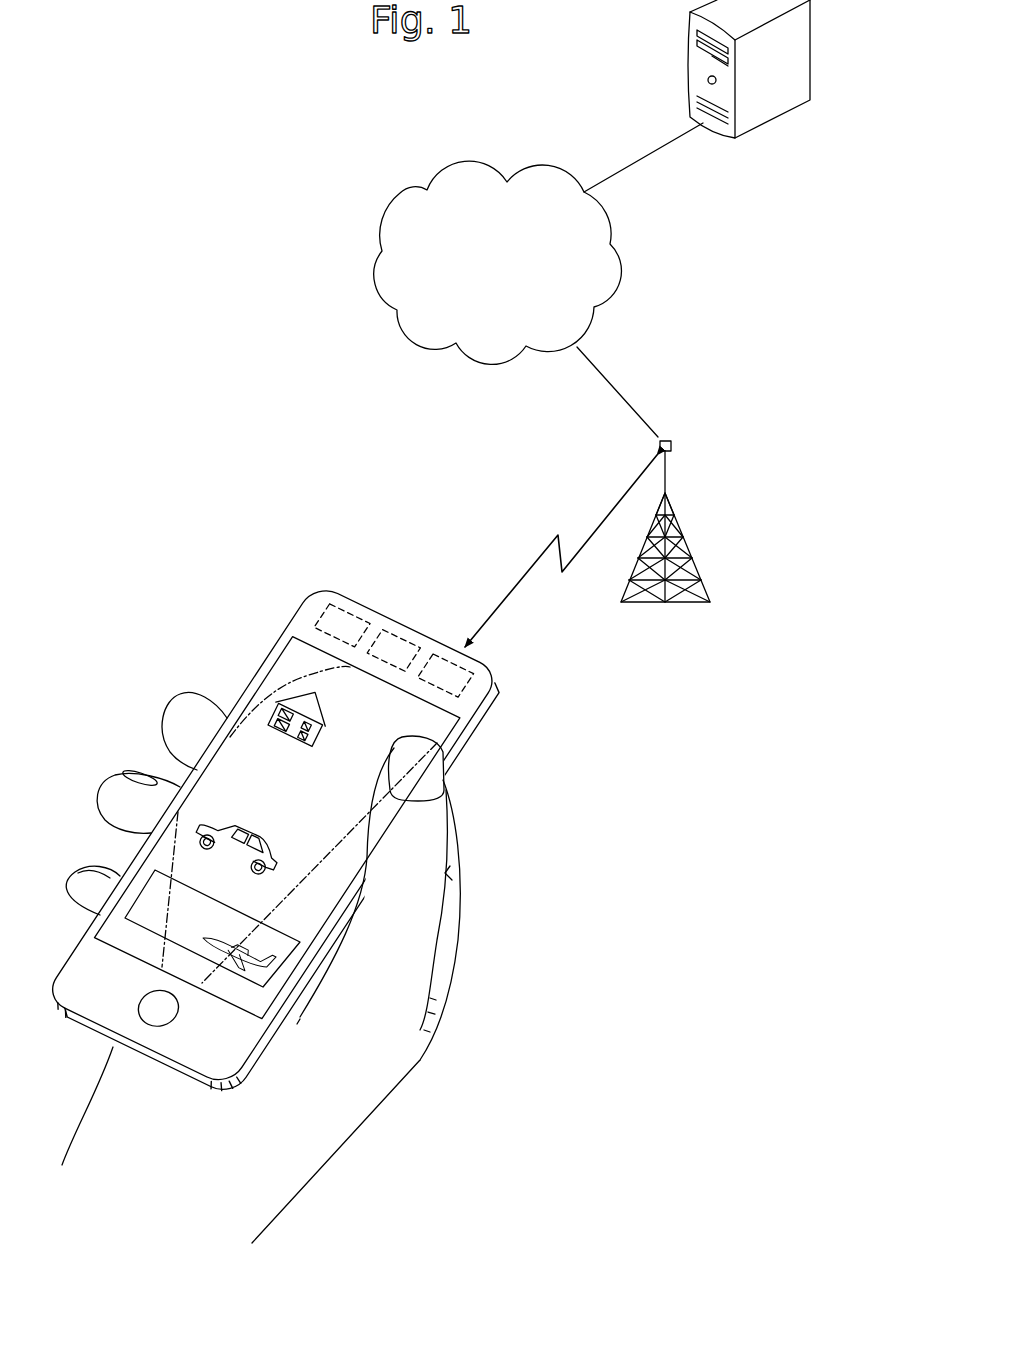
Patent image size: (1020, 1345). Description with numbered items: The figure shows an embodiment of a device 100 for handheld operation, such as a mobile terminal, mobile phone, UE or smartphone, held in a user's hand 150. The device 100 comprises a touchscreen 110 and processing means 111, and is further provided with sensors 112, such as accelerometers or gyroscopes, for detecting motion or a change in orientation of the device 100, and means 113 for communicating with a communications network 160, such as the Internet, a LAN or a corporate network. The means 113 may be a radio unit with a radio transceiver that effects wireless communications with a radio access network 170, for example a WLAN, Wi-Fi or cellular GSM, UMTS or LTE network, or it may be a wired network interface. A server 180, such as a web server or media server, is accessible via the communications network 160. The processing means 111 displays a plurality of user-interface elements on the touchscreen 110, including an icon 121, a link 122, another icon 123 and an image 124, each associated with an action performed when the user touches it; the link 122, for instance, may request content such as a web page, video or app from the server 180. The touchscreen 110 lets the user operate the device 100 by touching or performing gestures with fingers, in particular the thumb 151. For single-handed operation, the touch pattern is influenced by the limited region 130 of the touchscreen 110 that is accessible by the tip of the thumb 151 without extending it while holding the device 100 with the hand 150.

The device for handheld operation 100 is at (290, 597).
The touchscreen 110 is at (393, 718).
The processing means 111 is at (348, 613).
The sensors 112 is at (390, 643).
The means for communicating with a communications network 113 is at (467, 676).
The icon 121 is at (273, 703).
The link 122 is at (224, 762).
The icon 123 is at (193, 827).
The image 124 is at (157, 880).
The region of touchscreen 130 is at (303, 677).
The hand 150 is at (337, 1092).
The thumb 151 is at (423, 837).
The communications network 160 is at (400, 193).
The radio access network 170 is at (683, 538).
The server 180 is at (690, 33).